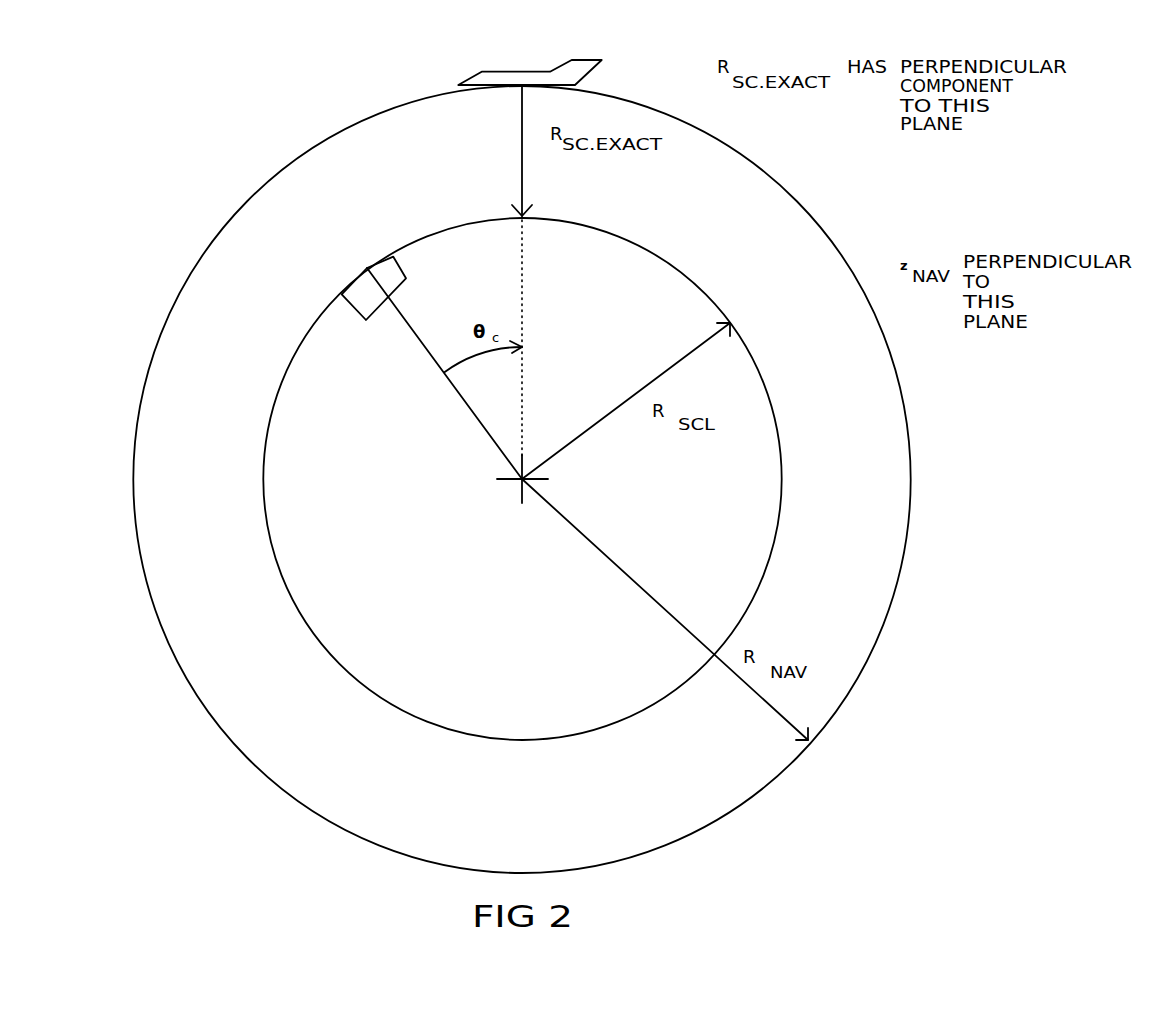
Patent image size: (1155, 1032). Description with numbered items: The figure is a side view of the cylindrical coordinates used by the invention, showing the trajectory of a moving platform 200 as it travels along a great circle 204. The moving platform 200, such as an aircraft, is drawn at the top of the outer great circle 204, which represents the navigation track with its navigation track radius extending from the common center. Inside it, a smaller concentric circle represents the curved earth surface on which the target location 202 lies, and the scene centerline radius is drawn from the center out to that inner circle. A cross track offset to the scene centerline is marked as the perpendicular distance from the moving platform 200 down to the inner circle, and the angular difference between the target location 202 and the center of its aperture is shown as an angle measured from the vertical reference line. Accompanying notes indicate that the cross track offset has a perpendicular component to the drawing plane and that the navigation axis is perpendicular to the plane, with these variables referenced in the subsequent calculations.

The moving platform 200 is at (529, 57).
The target location 202 is at (419, 366).
The great circle 204 is at (521, 479).